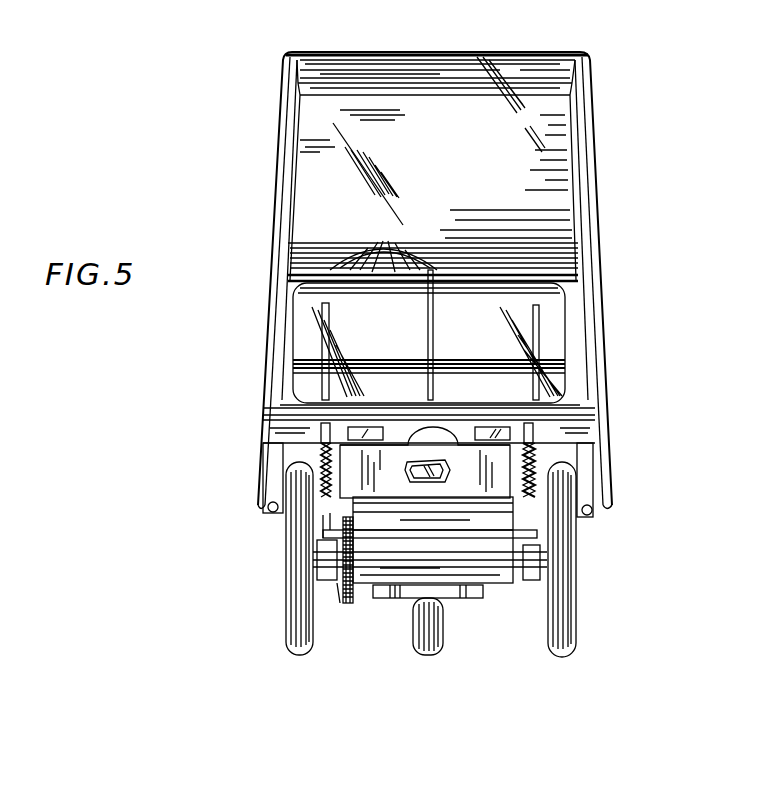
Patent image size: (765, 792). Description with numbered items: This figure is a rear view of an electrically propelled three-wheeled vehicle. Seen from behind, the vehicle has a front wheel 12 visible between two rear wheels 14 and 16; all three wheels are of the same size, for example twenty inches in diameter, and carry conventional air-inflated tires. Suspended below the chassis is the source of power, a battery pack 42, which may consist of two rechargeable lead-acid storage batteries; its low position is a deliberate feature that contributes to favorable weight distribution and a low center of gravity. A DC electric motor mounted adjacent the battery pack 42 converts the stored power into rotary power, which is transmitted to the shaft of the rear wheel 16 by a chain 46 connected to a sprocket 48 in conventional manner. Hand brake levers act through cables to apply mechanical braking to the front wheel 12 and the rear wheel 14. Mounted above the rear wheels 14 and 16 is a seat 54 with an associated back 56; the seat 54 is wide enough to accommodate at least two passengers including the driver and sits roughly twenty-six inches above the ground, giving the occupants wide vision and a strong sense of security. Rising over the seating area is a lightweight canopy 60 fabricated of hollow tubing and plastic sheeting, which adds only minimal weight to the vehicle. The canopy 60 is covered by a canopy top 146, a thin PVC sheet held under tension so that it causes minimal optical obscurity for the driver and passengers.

The front wheel 12 is at (431, 655).
The rear wheel 14 is at (565, 657).
The rear wheel 16 is at (310, 655).
The battery pack 42 is at (482, 600).
The chain 46 is at (348, 603).
The sprocket 48 is at (340, 53).
The seat 54 is at (300, 372).
The back 56 is at (307, 298).
The canopy 60 is at (614, 152).
The canopy top 146 is at (307, 148).